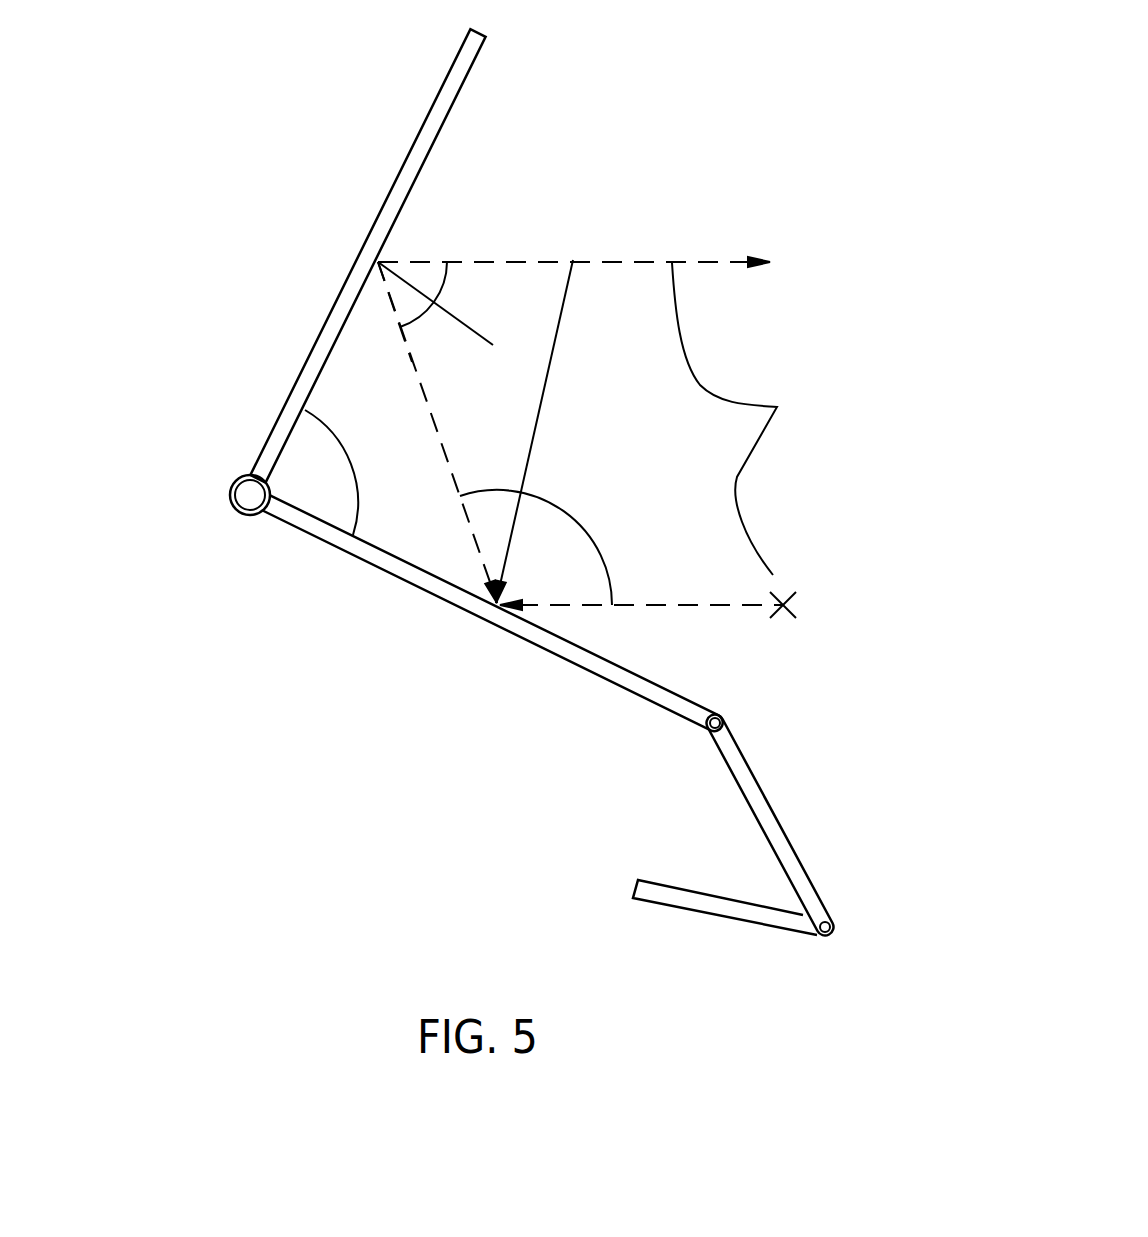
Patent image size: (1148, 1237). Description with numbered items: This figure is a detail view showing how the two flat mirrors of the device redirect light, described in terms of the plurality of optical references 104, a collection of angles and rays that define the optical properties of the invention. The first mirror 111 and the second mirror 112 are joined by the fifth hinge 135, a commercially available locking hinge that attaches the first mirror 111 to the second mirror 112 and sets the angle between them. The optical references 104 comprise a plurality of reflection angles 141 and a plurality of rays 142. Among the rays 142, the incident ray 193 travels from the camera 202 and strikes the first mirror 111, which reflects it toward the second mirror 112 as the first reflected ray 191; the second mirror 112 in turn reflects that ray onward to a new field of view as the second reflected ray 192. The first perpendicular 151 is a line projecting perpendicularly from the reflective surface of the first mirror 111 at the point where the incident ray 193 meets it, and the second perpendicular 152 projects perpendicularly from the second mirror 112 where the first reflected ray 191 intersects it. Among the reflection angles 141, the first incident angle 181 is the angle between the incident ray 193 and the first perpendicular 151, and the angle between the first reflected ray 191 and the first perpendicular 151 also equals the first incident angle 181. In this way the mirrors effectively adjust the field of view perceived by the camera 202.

The plurality of optical references 104 is at (300, 89).
The second mirror 112 is at (472, 72).
The first mirror 111 is at (540, 655).
The fifth hinge 135 is at (240, 500).
The plurality of reflection angles 141 is at (473, 450).
The first perpendicular 151 is at (566, 298).
The second perpendicular 152 is at (415, 283).
The first incident angle 181 is at (470, 370).
The first reflected ray 191 is at (392, 313).
The second reflected ray 192 is at (527, 260).
The incident ray 193 is at (672, 607).
The plurality of rays 142 is at (757, 419).
The camera 202 is at (790, 607).